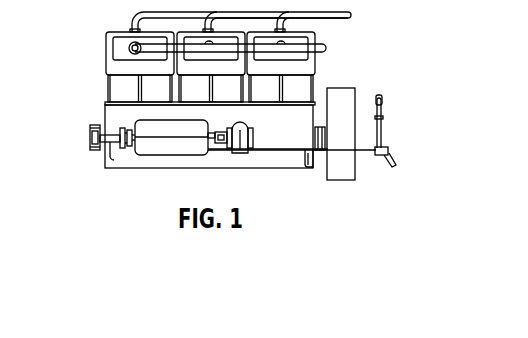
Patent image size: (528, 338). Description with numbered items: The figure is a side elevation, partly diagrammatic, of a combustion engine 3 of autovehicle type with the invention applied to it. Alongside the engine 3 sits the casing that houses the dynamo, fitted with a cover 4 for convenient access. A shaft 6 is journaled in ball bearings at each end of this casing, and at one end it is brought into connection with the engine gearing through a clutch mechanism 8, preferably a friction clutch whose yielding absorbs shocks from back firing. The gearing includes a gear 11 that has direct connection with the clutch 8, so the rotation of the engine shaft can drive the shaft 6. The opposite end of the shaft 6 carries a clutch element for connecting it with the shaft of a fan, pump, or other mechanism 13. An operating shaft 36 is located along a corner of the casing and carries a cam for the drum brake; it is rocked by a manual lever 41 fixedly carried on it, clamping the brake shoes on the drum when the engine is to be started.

The engine 3 is at (210, 135).
The cover 4 is at (162, 125).
The shaft 6 is at (230, 150).
The clutch mechanism 8 is at (122, 128).
The gear 11 is at (92, 150).
The fan, pump, or other mechanism 13 is at (245, 150).
The operating shaft 36 is at (308, 165).
The manual lever 41 is at (383, 132).